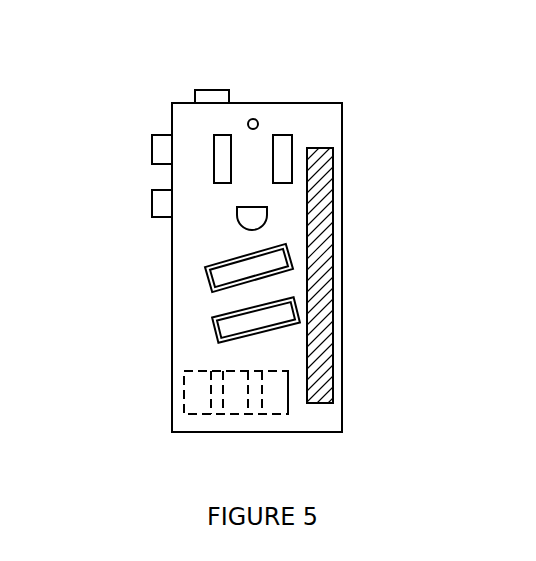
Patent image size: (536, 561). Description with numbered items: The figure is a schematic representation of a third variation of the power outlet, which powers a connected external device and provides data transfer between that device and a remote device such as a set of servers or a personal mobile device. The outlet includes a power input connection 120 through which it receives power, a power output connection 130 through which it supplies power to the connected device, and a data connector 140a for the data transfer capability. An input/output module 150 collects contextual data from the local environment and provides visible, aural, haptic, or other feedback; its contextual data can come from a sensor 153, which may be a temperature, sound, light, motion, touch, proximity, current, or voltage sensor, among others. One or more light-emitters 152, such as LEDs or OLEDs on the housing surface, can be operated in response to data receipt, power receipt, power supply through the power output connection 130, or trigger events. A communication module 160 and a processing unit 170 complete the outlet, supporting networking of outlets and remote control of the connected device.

The power input connection 120 is at (194, 92).
The power output connection 130 is at (201, 220).
The data connector 140a is at (219, 282).
The input/output module 150 is at (172, 402).
The light-emitter 152 is at (269, 108).
The sensor 153 is at (351, 213).
The communication module 160 is at (230, 428).
The processing unit 170 is at (295, 425).